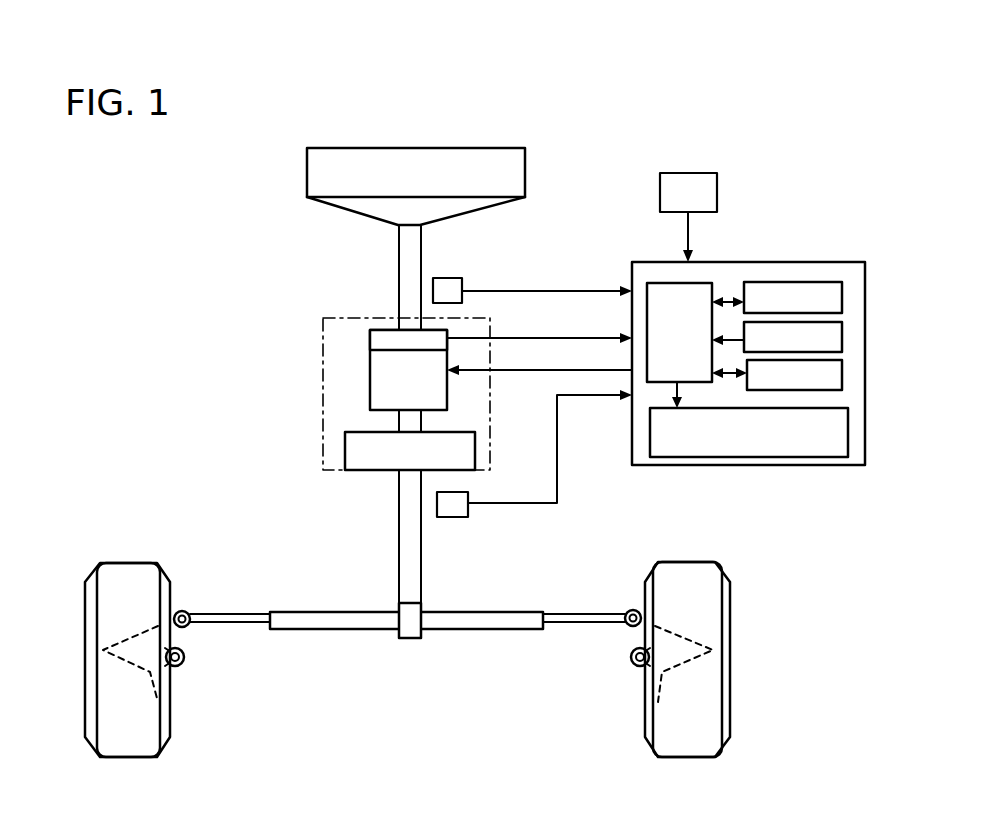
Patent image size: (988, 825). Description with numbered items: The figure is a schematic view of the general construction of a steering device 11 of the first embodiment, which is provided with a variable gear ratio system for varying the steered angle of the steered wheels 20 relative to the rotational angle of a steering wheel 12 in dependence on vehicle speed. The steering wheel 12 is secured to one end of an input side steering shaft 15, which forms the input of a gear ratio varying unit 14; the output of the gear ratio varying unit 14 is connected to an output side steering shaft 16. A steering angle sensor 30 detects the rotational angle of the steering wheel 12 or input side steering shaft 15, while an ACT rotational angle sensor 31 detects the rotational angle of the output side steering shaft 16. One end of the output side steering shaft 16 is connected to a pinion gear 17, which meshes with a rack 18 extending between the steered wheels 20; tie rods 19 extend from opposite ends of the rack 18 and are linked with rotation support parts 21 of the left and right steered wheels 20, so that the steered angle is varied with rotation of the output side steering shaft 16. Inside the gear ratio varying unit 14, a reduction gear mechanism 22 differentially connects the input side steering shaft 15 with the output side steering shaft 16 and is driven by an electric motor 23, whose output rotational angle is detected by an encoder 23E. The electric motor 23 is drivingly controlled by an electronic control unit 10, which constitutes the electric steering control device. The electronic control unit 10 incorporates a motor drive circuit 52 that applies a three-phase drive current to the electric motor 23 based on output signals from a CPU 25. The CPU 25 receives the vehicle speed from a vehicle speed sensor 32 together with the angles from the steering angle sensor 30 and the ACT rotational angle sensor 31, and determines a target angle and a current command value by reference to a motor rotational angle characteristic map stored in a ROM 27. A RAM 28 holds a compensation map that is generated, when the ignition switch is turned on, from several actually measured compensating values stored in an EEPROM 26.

The electronic control unit 10 is at (796, 256).
The steering device 11 is at (534, 82).
The steering wheel 12 is at (307, 163).
The gear ratio varying unit 14 is at (323, 410).
The input side steering shaft 15 is at (398, 244).
The output side steering shaft 16 is at (398, 513).
The pinion gear 17 is at (412, 640).
The rack 18 is at (328, 622).
The tie rods 19 is at (230, 623).
The steered wheels 20 is at (92, 617).
The rotation support parts 21 is at (185, 611).
The reduction gear mechanism 22 is at (345, 450).
The electric motor 23 is at (370, 374).
The encoder 23E is at (370, 334).
The CPU 25 is at (665, 283).
The EEPROM 26 is at (842, 298).
The ROM 27 is at (842, 338).
The RAM 28 is at (842, 375).
The steering angle sensor 30 is at (447, 278).
The ACT rotational angle sensor 31 is at (455, 518).
The vehicle speed sensor 32 is at (720, 190).
The motor drive circuit 52 is at (848, 437).